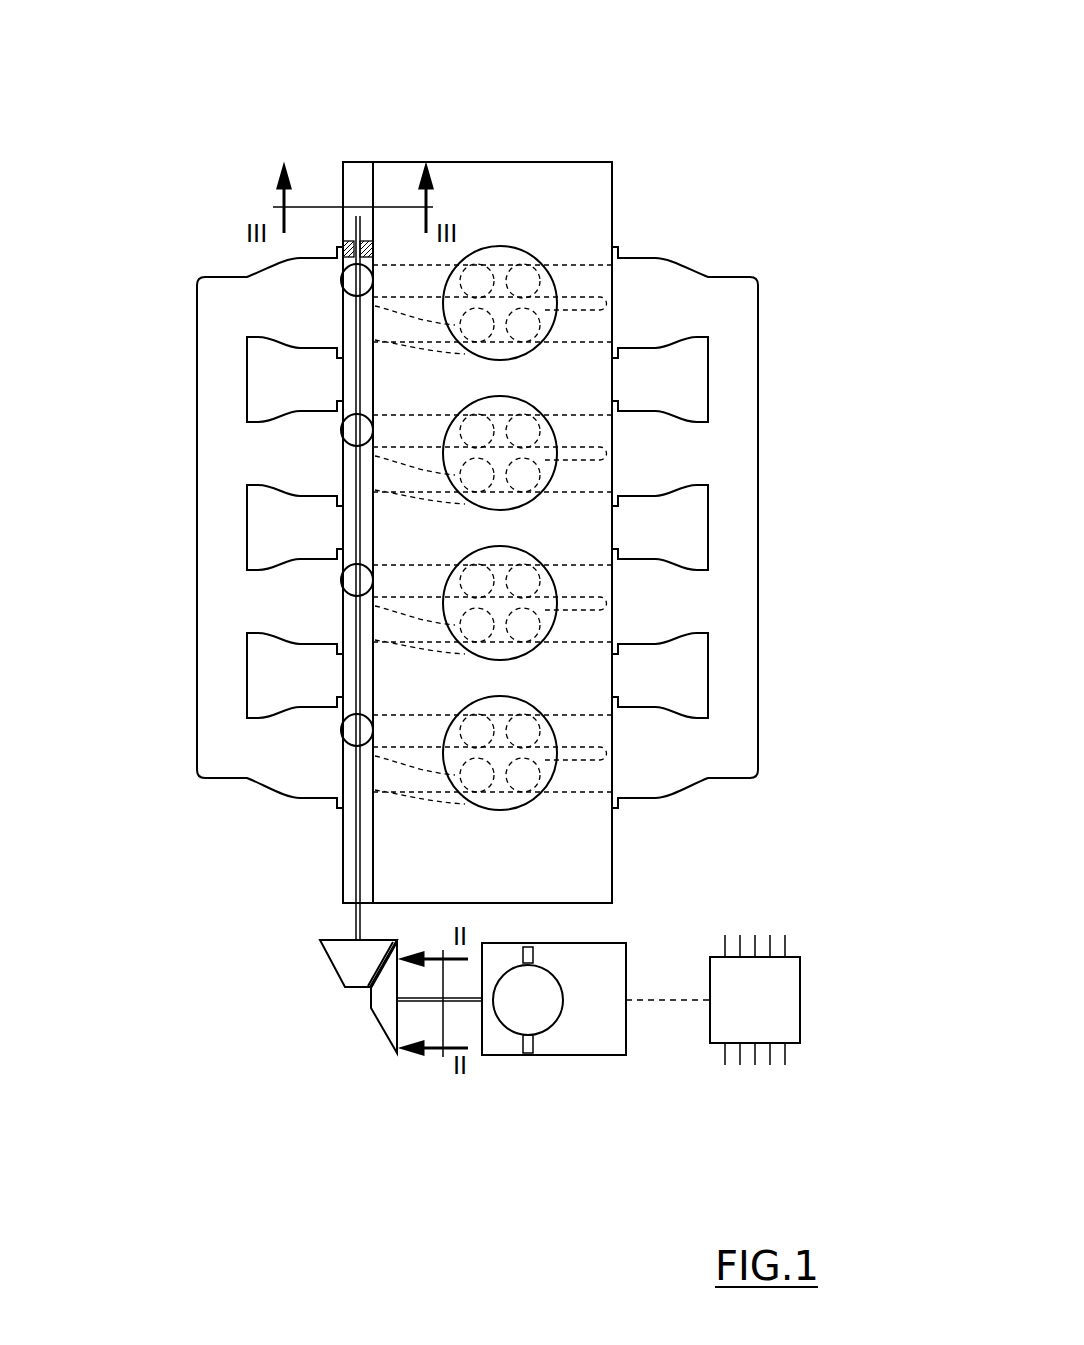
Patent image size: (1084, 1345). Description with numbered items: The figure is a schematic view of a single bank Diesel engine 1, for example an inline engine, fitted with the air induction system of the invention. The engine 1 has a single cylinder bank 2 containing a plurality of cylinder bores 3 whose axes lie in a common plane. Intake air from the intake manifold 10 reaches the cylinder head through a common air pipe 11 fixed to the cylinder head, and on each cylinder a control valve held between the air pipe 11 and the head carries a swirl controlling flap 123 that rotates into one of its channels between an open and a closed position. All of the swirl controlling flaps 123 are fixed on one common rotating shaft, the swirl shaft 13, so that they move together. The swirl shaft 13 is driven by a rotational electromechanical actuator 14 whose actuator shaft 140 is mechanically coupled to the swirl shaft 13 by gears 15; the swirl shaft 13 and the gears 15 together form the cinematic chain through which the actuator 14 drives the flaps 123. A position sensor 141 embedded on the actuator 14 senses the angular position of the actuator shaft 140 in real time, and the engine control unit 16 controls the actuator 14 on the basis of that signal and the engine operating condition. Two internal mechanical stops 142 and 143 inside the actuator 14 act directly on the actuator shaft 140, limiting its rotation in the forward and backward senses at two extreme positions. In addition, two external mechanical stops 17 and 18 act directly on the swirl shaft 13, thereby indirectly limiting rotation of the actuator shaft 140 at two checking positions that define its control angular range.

The engine 1 is at (643, 203).
The cylinder bank 2 is at (488, 168).
The cylinder bores 3 is at (523, 245).
The intake manifold 10 is at (213, 510).
The air pipe 11 is at (405, 513).
The swirl shaft 13 is at (357, 870).
The electromechanical actuator 14 is at (565, 1040).
The gears 15 is at (350, 1010).
The engine control unit 16 is at (783, 992).
The external mechanical stop 17 is at (340, 243).
The external mechanical stop 18 is at (366, 243).
The swirl controlling flap 123 is at (243, 515).
The actuator shaft 140 is at (418, 1000).
The position sensor 141 is at (555, 1003).
The internal mechanical stop 142 is at (535, 955).
The internal mechanical stop 143 is at (527, 1053).